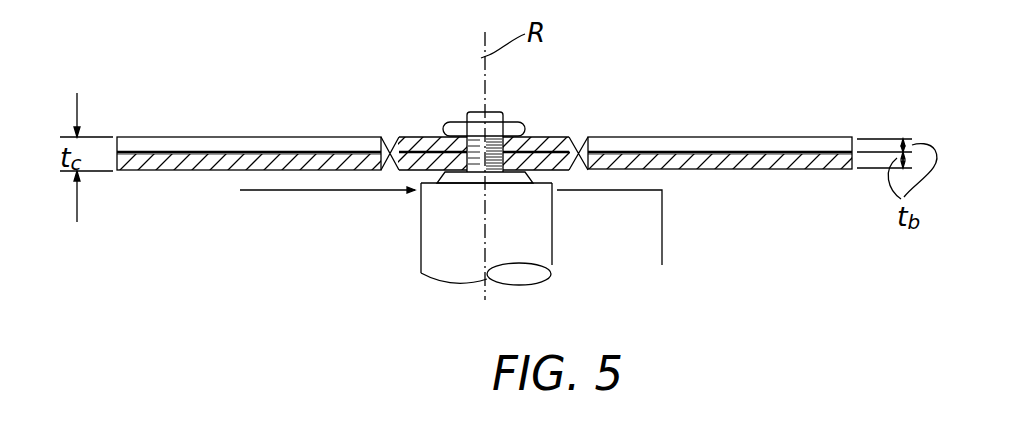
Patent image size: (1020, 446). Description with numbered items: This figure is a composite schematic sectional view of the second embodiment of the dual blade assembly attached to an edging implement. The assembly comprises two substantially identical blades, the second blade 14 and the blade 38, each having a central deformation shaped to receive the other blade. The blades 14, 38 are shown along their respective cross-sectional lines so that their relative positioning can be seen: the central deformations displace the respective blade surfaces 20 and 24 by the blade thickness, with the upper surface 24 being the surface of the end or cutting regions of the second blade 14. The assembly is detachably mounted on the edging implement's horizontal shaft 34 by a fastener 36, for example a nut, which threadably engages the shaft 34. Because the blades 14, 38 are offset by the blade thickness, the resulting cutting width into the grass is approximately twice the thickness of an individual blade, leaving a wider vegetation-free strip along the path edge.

The second blade 14 is at (499, 147).
The blade surface 20 is at (213, 171).
The upper surface 24 is at (499, 150).
The horizontal shaft 34 is at (477, 170).
The fastener 36 is at (522, 128).
The blade 38 is at (768, 163).